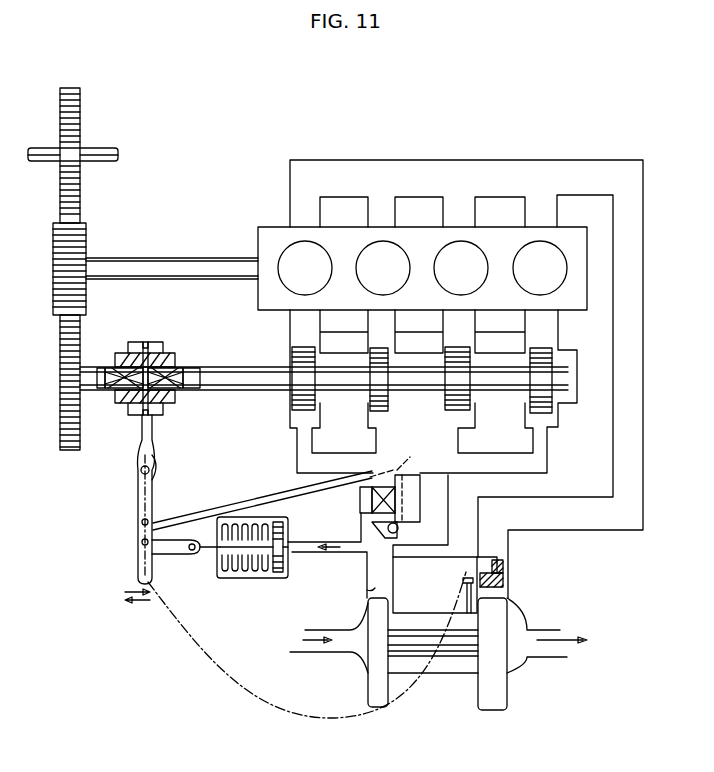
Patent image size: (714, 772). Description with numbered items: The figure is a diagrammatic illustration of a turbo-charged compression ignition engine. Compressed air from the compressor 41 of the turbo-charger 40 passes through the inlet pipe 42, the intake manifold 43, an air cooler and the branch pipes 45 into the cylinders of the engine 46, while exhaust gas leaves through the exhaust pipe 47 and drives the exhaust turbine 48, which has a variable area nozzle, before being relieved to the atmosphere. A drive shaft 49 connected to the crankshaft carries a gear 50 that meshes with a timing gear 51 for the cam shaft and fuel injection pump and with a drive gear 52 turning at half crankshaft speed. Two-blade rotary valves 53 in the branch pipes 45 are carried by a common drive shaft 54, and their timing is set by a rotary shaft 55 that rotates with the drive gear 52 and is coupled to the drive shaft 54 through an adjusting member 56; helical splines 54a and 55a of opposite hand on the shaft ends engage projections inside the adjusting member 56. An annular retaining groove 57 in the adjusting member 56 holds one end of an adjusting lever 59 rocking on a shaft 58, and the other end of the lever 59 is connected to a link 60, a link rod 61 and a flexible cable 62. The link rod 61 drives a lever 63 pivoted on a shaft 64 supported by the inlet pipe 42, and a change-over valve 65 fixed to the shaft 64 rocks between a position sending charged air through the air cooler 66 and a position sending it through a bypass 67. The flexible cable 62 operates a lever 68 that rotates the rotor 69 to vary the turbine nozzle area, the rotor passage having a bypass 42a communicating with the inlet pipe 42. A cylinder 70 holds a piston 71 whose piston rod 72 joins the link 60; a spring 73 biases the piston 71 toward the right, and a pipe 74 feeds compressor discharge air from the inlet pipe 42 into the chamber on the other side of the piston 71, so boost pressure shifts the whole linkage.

The turbo-charger 40 is at (433, 683).
The compressor 41 is at (378, 677).
The inlet pipe 42 is at (370, 588).
The bypass 42a is at (452, 558).
The intake manifold 43 is at (520, 466).
The branch pipes 45 is at (312, 436).
The engine 46 is at (417, 240).
The exhaust pipe 47 is at (528, 172).
The exhaust turbine 48 is at (503, 675).
The drive shaft 49 is at (191, 260).
The gear 50 is at (86, 240).
The timing gear 51 is at (80, 108).
The drive gear 52 is at (60, 426).
The rotary valves 53 is at (297, 365).
The drive shaft 54 is at (225, 370).
The helical spline 54a is at (192, 394).
The rotary shaft 55 is at (100, 363).
The helical spline 55a is at (99, 394).
The adjusting member 56 is at (165, 362).
The annular retaining groove 57 is at (148, 344).
The shaft 58 is at (140, 472).
The adjusting lever 59 is at (137, 483).
The link 60 is at (177, 550).
The link rod 61 is at (185, 521).
The flexible cable 62 is at (233, 677).
The lever 63 is at (400, 466).
The shaft 64 is at (390, 534).
The change-over valve 65 is at (381, 526).
The air cooler 66 is at (372, 498).
The bypass 67 is at (432, 517).
The lever 68 is at (463, 598).
The rotor 69 is at (503, 558).
The cylinder 70 is at (241, 520).
The piston 71 is at (285, 527).
The piston rod 72 is at (208, 555).
The spring 73 is at (248, 566).
The pipe 74 is at (308, 549).